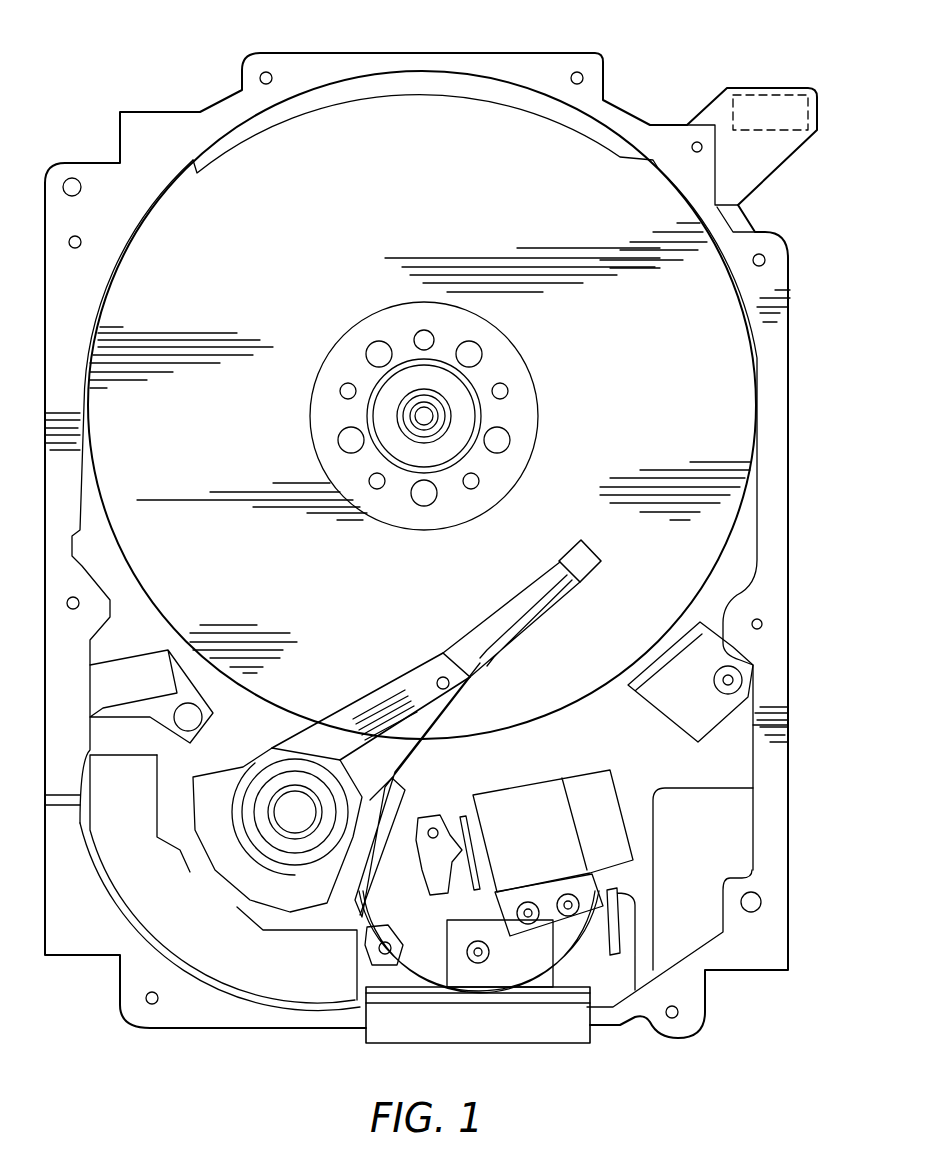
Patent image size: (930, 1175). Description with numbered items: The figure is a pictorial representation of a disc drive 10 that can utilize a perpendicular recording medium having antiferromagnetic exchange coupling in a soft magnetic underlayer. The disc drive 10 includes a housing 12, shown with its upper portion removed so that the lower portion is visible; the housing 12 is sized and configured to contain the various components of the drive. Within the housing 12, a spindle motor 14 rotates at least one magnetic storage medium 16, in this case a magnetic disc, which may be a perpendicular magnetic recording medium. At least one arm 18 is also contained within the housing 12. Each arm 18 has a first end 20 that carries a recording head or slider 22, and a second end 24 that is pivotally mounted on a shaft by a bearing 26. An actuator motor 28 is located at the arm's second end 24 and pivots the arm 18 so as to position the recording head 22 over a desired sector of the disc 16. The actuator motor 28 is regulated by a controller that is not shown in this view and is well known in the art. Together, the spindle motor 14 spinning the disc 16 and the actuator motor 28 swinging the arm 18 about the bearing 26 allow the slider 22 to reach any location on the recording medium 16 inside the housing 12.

The disc drive 10 is at (99, 99).
The housing 12 is at (556, 68).
The spindle motor 14 is at (413, 421).
The magnetic storage medium 16 is at (338, 222).
The arm 18 is at (410, 690).
The first end 20 is at (515, 590).
The recording head or slider 22 is at (585, 556).
The second end 24 is at (321, 754).
The bearing 26 is at (290, 808).
The actuator motor 28 is at (186, 926).